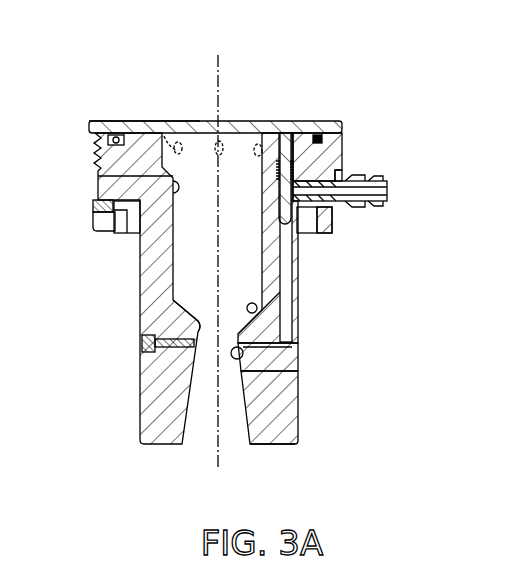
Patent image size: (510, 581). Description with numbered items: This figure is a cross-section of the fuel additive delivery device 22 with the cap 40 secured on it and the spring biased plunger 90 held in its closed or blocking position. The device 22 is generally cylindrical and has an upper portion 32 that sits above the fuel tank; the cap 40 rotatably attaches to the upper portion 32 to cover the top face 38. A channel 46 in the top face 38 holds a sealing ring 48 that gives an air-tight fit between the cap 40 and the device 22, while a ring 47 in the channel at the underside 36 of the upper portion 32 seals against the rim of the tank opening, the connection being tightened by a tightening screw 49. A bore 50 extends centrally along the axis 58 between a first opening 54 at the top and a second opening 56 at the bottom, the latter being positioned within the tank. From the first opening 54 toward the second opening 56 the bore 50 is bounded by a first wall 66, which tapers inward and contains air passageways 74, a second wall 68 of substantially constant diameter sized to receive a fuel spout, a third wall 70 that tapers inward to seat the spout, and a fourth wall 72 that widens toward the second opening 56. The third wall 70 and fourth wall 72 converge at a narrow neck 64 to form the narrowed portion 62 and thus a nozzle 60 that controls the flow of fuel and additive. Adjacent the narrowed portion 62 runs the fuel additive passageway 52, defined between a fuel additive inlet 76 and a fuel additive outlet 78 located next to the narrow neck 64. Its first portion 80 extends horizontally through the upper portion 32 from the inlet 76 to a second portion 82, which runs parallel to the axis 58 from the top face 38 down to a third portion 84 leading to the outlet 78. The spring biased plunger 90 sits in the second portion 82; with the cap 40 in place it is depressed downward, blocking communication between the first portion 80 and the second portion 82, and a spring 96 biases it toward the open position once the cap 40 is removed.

The fuel additive delivery device 22 is at (233, 257).
The upper portion 32 is at (88, 190).
The underside 36 is at (104, 232).
The top face 38 is at (143, 126).
The cap 40 is at (247, 128).
The channel 46 is at (320, 134).
The ring 47 is at (128, 208).
The sealing ring 48 is at (343, 133).
The tightening screw 49 is at (95, 212).
The bore 50 is at (200, 460).
The fuel additive passageway 52 is at (305, 298).
The first opening 54 is at (178, 128).
The second opening 56 is at (246, 446).
The axis 58 is at (220, 65).
The nozzle 60 is at (197, 312).
The narrowed portion 62 is at (228, 330).
The narrow neck 64 is at (178, 317).
The first wall 66 is at (266, 118).
The second wall 68 is at (97, 173).
The third wall 70 is at (263, 303).
The fourth wall 72 is at (242, 403).
The air passageways 74 is at (198, 125).
The fuel additive inlet 76 is at (388, 191).
The fuel additive outlet 78 is at (298, 371).
The first portion 80 is at (320, 195).
The second portion 82 is at (289, 256).
The third portion 84 is at (292, 347).
The spring biased plunger 90 is at (300, 168).
The spring 96 is at (337, 176).